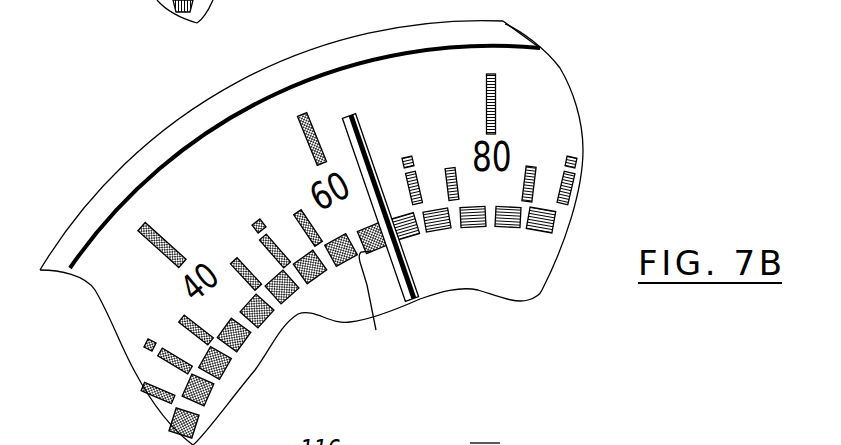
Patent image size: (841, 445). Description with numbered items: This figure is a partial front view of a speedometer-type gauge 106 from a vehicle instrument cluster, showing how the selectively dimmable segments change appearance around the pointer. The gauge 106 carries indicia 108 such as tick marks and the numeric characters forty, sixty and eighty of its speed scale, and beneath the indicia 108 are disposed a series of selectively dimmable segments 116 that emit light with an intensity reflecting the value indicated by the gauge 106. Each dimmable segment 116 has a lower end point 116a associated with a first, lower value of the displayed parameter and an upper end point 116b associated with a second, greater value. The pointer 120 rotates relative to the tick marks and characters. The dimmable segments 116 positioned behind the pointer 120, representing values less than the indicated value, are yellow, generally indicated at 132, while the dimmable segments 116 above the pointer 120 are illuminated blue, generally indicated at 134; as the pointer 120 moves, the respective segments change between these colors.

The gauge 106 is at (138, 145).
The indicia 108 is at (165, 292).
The dimmable segment 116 is at (330, 138).
The lower end point 116a is at (379, 308).
The upper end point 116b is at (457, 185).
The pointer 120 is at (424, 298).
The yellow dimmable segments 132 is at (128, 328).
The blue dimmable segments 134 is at (537, 121).